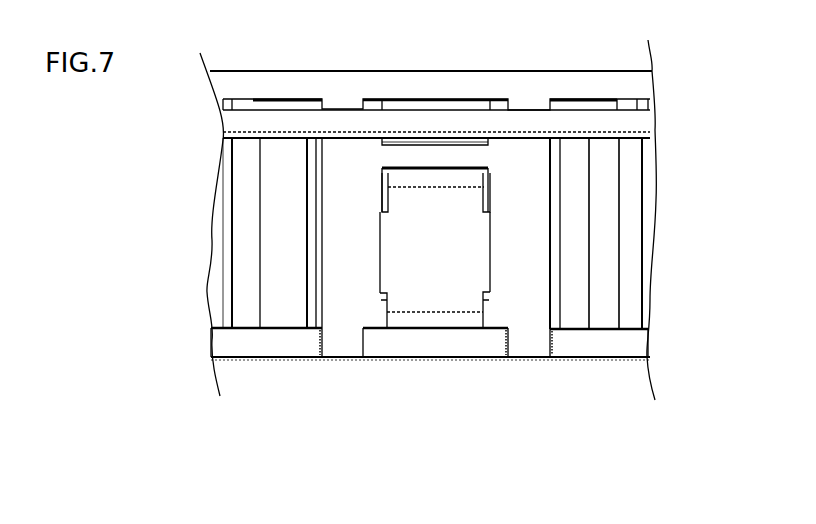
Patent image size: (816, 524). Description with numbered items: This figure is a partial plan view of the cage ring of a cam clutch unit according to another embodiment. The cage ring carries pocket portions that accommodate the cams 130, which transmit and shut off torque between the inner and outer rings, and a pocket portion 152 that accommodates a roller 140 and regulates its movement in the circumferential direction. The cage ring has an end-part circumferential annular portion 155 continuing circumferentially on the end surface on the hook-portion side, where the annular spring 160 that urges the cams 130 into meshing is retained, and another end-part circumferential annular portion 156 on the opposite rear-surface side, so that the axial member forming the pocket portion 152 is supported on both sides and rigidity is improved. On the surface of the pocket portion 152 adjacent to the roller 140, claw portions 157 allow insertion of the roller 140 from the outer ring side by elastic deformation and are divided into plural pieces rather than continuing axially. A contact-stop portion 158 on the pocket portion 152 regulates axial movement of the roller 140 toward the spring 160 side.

The cam 130 is at (250, 220).
The roller 140 is at (437, 262).
The pocket portion 152 is at (465, 247).
The end-part circumferential annular portion 155 is at (263, 82).
The end-part circumferential annular portion 156 is at (258, 348).
The claw portion 157 is at (382, 185).
The contact-stop portion 158 is at (433, 157).
The annular spring 160 is at (307, 102).